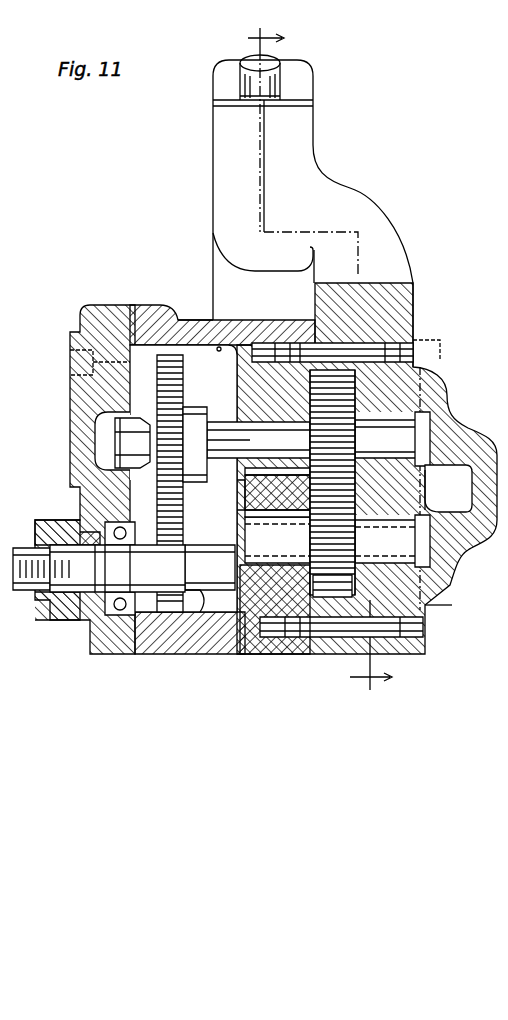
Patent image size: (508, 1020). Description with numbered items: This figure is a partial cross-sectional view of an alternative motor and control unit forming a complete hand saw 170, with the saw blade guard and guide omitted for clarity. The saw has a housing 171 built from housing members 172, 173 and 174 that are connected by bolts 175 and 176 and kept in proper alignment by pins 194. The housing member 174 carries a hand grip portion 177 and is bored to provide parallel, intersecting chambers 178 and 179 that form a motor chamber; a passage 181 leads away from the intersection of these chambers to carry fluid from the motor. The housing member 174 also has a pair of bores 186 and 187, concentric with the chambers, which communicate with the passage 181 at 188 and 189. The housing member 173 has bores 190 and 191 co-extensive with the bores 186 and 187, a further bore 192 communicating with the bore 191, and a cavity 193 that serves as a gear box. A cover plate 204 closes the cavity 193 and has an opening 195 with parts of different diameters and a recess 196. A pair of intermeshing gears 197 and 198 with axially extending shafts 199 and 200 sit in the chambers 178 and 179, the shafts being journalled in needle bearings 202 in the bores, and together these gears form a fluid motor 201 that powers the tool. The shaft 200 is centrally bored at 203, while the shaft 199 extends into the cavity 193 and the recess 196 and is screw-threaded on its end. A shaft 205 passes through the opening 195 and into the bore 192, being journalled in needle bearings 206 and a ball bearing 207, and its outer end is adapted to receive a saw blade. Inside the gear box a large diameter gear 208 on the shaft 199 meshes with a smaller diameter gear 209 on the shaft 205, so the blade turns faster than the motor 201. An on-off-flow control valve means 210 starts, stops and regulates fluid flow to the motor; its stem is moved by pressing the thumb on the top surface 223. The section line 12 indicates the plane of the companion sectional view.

The section line 12 is at (309, 368).
The hand saw 170 is at (356, 178).
The housing 171 is at (186, 302).
The housing member 172 is at (91, 313).
The housing member 173 is at (149, 309).
The housing member 174 is at (405, 299).
The bolt 175 is at (70, 358).
The bolt 176 is at (418, 366).
The hand grip portion 177 is at (248, 271).
The chamber 178 is at (325, 372).
The chamber 179 is at (356, 590).
The passage 181 is at (457, 550).
The bore 186 is at (434, 411).
The bore 187 is at (449, 594).
The communication 188 is at (449, 488).
The communication 189 is at (423, 516).
The bore 190 is at (236, 422).
The bore 191 is at (262, 520).
The bore 192 is at (218, 596).
The cavity 193 is at (222, 348).
The pin 194 is at (413, 347).
The opening 195 is at (62, 522).
The recess 196 is at (96, 434).
The gear 197 is at (258, 440).
The gear 198 is at (277, 540).
The shaft 199 is at (392, 439).
The shaft 200 is at (290, 572).
The fluid motor 201 is at (333, 598).
The needle bearing 202 is at (280, 470).
The central bore 203 is at (392, 541).
The cover plate 204 is at (115, 445).
The shaft 205 is at (30, 600).
The needle bearing 206 is at (210, 567).
The ball bearing 207 is at (118, 612).
The large diameter gear 208 is at (200, 388).
The smaller diameter gear 209 is at (170, 612).
The on-off-flow control valve means 210 is at (288, 92).
The top surface 223 is at (272, 67).